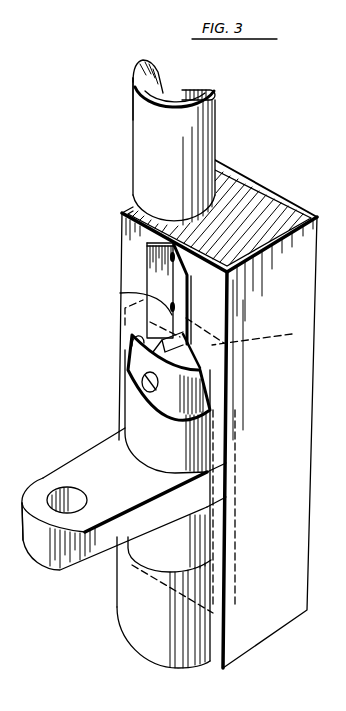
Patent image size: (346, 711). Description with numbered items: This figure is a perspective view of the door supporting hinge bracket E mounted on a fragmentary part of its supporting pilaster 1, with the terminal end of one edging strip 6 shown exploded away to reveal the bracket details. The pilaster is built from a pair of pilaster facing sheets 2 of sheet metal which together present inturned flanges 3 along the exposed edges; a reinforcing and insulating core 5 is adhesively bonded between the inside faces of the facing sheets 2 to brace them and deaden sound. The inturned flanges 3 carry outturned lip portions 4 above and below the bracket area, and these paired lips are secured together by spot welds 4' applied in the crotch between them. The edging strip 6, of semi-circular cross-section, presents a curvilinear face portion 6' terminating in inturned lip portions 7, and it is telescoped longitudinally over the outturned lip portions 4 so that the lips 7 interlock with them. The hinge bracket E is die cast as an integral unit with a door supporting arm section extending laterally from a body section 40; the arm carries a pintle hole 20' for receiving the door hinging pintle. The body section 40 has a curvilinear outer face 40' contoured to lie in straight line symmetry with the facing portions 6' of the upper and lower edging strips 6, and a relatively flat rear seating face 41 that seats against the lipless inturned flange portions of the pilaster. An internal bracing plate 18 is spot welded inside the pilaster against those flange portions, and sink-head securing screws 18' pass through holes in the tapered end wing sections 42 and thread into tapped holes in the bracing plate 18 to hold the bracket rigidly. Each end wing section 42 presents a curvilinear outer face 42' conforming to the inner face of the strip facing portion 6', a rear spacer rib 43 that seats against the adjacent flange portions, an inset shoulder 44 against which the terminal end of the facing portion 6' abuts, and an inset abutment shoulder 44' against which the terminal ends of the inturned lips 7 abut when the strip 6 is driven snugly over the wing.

The floor supported pilaster 1 is at (296, 205).
The pilaster facing sheet 2 is at (218, 165).
The inturned flange 3 is at (122, 223).
The outturned lip portion 4 is at (185, 290).
The spot weld 4' is at (129, 244).
The reinforcing and insulating core 5 is at (272, 196).
The edging strip 6 is at (158, 364).
The curvilinear facing portion 6' is at (126, 373).
The inturned lip portion 7 is at (149, 79).
The internal bracing plate 18 is at (262, 461).
The securing screw 18' is at (117, 374).
The pintle hole 20' is at (113, 384).
The body section 40 is at (174, 454).
The curvilinear outer face 40' is at (177, 492).
The rear seating face 41 is at (215, 440).
The end wing section 42 is at (213, 361).
The curvilinear outer face of end wing section 42' is at (220, 357).
The rear spacer rib 43 is at (134, 344).
The inset shoulder 44 is at (143, 377).
The inset abutment shoulder 44' is at (238, 390).
The door supporting hinge bracket E is at (42, 572).